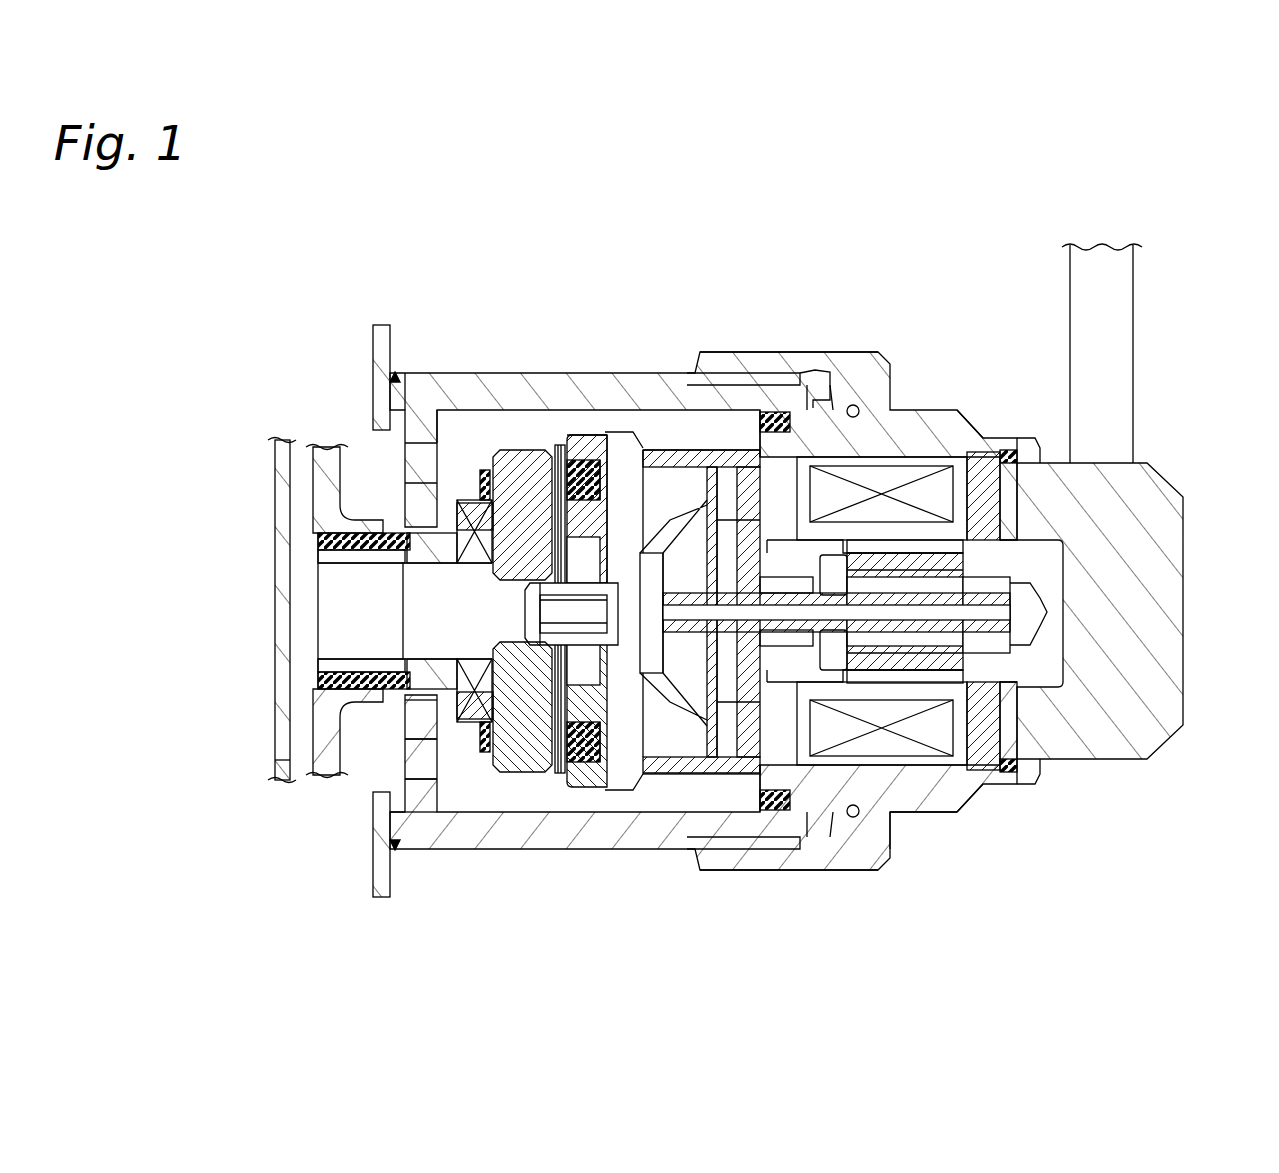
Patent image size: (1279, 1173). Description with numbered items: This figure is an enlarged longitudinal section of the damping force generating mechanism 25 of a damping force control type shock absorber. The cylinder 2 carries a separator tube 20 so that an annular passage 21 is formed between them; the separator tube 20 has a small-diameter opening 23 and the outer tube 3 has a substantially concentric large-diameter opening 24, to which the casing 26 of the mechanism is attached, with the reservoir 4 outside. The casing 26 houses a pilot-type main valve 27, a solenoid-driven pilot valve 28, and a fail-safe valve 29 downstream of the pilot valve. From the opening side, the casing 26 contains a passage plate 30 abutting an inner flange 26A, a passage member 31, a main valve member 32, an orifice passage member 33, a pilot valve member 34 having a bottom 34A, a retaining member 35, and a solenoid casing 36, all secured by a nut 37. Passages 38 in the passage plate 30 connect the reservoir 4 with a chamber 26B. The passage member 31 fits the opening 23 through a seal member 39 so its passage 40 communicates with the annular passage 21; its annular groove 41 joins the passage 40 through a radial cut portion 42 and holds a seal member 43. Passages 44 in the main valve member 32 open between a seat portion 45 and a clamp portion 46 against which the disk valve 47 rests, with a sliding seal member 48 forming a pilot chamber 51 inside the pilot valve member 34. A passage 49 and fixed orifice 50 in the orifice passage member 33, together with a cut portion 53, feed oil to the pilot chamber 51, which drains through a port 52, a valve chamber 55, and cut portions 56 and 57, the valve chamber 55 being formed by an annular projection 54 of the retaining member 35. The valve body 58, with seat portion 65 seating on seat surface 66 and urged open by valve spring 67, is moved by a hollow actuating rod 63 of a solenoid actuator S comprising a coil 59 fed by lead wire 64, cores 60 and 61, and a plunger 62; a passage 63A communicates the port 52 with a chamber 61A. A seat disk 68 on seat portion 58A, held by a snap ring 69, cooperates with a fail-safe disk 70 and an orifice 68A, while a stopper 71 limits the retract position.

The cylinder 2 is at (283, 480).
The outer tube 3 is at (380, 330).
The reservoir 4 is at (370, 778).
The separator tube 20 is at (325, 445).
The annular passage 21 is at (330, 542).
The small-diameter opening 23 is at (330, 662).
The large-diameter opening 24 is at (420, 395).
The damping force generating mechanism 25 is at (866, 247).
The casing 26 is at (530, 390).
The inner flange 26A is at (385, 830).
The chamber 26B is at (420, 832).
The main valve 27 is at (580, 440).
The pilot valve 28 is at (705, 440).
The fail-safe valve 29 is at (790, 430).
The passage plate 30 is at (400, 862).
The passage member 31 is at (430, 790).
The main valve member 32 is at (465, 790).
The orifice passage member 33 is at (585, 780).
The pilot valve member 34 is at (630, 775).
The bottom 34A is at (665, 700).
The retaining member 35 is at (790, 760).
The solenoid casing 36 is at (905, 850).
The nut 37 is at (880, 790).
The passages 38 is at (455, 410).
The seal member 39 is at (330, 680).
The passage 40 is at (350, 590).
The annular groove 41 is at (555, 455).
The radial cut portion 42 is at (480, 505).
The seal member 43 is at (520, 450).
The passages 44 is at (470, 700).
The seat portion 45 is at (545, 700).
The clamp portion 46 is at (510, 770).
The disk valve 47 is at (600, 470).
The sliding seal member 48 is at (625, 450).
The passage 49 is at (655, 450).
The fixed orifice 50 is at (530, 600).
The pilot chamber 51 is at (560, 765).
The port 52 is at (565, 775).
The cut portion 53 is at (595, 745).
The annular projection 54 is at (735, 775).
The valve chamber 55 is at (700, 775).
The cut portion 56 is at (860, 385).
The cut portion 57 is at (755, 410).
The valve body 58 is at (725, 372).
The seat portion 58A is at (812, 400).
The coil 59 is at (900, 480).
The core 60 is at (790, 420).
The core 61 is at (1030, 440).
The chamber 61A is at (1010, 640).
The plunger 62 is at (985, 795).
The actuating rod 63 is at (1170, 500).
The passage 63A is at (1047, 612).
The lead wire 64 is at (1133, 370).
The seat portion 65 is at (690, 428).
The seat surface 66 is at (835, 750).
The valve spring 67 is at (650, 775).
The seat disk 68 is at (880, 450).
The orifice 68A is at (860, 735).
The snap ring 69 is at (895, 800).
The fail-safe disk 70 is at (780, 770).
The stopper 71 is at (980, 470).
The solenoid actuator S is at (965, 415).